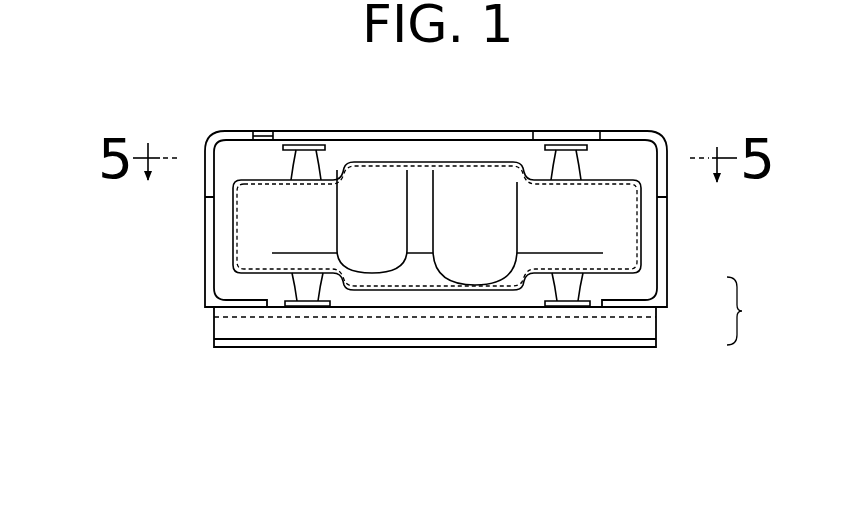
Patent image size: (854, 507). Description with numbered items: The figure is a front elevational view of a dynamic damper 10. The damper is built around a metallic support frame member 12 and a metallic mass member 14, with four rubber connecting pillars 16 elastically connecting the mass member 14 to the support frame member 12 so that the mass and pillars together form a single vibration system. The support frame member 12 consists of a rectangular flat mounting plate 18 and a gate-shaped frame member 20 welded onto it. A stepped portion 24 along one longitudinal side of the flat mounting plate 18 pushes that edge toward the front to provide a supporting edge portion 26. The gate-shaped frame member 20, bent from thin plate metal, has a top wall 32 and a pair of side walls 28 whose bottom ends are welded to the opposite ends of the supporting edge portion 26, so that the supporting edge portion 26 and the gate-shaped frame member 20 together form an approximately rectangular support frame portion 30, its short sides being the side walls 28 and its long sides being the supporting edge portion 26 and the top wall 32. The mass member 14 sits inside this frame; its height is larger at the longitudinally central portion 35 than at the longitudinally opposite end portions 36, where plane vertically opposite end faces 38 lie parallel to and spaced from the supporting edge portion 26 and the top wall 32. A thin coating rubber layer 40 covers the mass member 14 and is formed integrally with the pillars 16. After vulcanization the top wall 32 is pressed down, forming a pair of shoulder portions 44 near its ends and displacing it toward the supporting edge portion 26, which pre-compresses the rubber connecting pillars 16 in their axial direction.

The dynamic damper 10 is at (575, 96).
The support frame member 12 is at (747, 311).
The mass member 14 is at (228, 226).
The rubber connecting pillars 16 is at (305, 166).
The flat mounting plate 18 is at (662, 343).
The gate-shaped frame member 20 is at (672, 270).
The stepped portion 24 is at (222, 328).
The supporting edge portion 26 is at (477, 312).
The side walls 28 is at (209, 207).
The support frame portion 30 is at (397, 122).
The top wall 32 is at (452, 131).
The longitudinally central portion 35 is at (417, 268).
The longitudinally opposite end portions 36 is at (258, 255).
The vertically opposite end faces 38 is at (262, 178).
The coating rubber layer 40 is at (486, 182).
The shoulder portions 44 is at (253, 131).